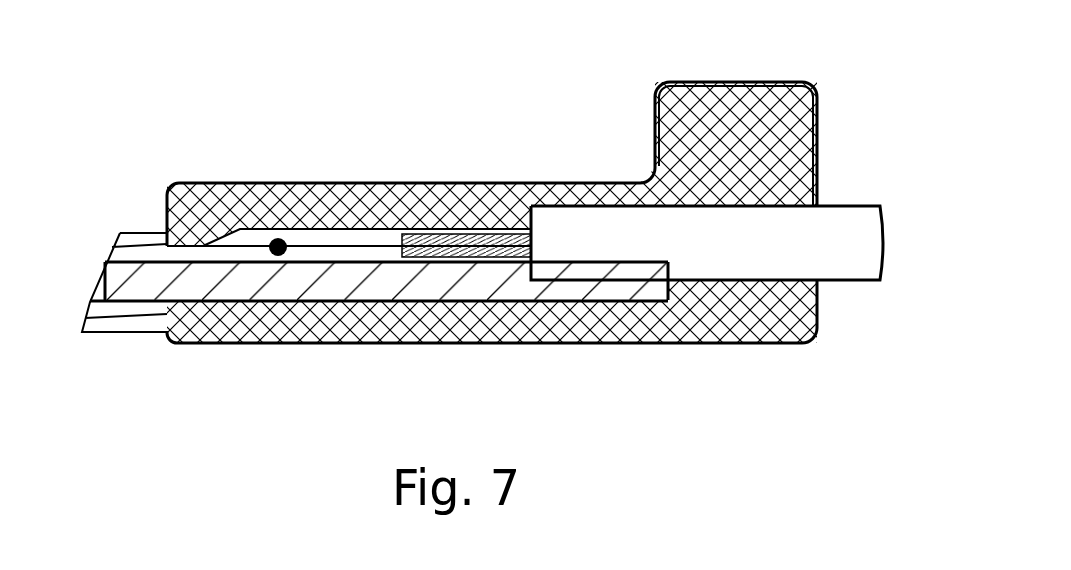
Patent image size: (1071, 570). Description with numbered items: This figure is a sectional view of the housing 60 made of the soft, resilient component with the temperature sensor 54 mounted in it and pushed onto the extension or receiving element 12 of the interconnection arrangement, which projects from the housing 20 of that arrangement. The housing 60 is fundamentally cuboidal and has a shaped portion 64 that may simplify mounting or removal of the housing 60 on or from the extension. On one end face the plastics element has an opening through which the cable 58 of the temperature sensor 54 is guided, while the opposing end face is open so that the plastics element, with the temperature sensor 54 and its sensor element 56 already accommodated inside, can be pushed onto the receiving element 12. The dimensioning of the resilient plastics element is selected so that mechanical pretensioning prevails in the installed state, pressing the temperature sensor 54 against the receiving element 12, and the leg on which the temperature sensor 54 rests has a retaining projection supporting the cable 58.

The receiving element 12 is at (232, 290).
The housing of the interconnection arrangement 20 is at (131, 232).
The temperature sensor 54 is at (380, 248).
The sensor element 56 is at (279, 258).
The cable 58 is at (847, 267).
The housing 60 is at (455, 183).
The shaped portion 64 is at (763, 100).